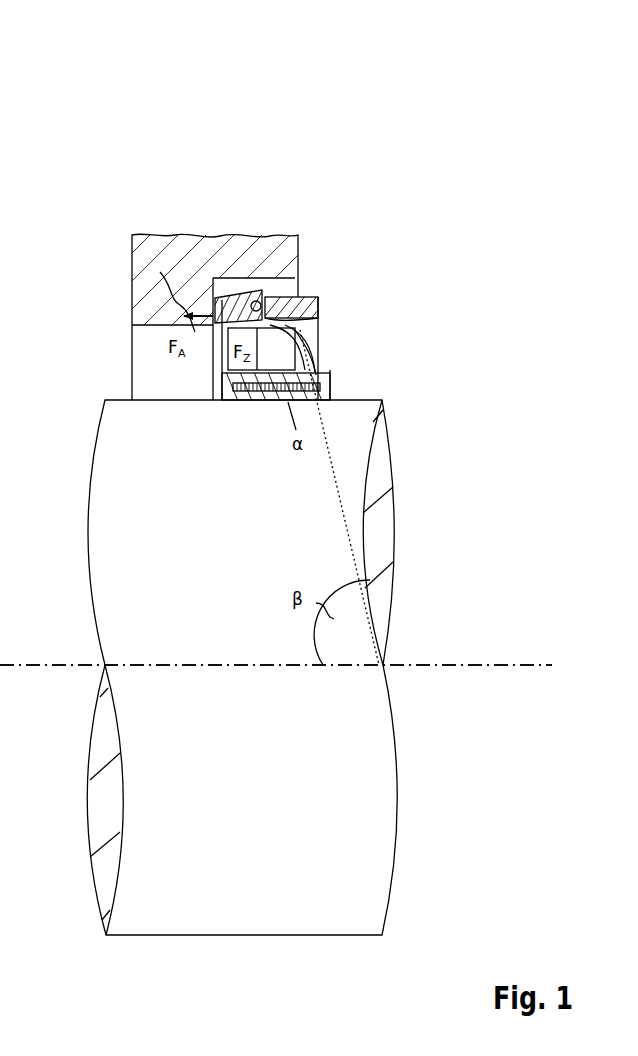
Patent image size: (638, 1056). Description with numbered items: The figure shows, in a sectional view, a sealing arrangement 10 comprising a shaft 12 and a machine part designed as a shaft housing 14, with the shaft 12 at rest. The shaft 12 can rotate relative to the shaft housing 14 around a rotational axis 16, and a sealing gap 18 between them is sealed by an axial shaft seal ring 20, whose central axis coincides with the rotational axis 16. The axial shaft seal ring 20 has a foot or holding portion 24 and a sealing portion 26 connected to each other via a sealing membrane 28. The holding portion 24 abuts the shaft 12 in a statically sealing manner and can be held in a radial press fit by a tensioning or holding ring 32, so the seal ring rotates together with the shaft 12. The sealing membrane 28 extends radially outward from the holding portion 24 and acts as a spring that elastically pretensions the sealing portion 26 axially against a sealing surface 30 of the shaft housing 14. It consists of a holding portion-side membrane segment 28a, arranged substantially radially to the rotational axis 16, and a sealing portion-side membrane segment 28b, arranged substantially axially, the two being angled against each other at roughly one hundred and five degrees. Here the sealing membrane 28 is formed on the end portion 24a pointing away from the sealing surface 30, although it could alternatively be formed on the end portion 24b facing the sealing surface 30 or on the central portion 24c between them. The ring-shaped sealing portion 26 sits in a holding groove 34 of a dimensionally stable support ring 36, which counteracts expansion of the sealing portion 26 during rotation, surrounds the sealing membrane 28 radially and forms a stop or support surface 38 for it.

The sealing arrangement 10 is at (467, 94).
The shaft 12 is at (240, 622).
The shaft housing 14 is at (290, 262).
The rotational axis 16 is at (477, 665).
The sealing gap 18 is at (292, 284).
The axial shaft seal ring 20 is at (218, 296).
The holding portion 24 is at (272, 400).
The end portion 24a is at (374, 420).
The end portion 24b is at (210, 398).
The central portion 24c is at (256, 402).
The sealing portion 26 is at (160, 272).
The sealing membrane 28 is at (318, 352).
The holding portion-side membrane segment 28a is at (318, 360).
The sealing portion-side membrane segment 28b is at (322, 318).
The sealing surface 30 is at (222, 280).
The holding ring 32 is at (240, 398).
The holding groove 34 is at (262, 311).
The support ring 36 is at (254, 300).
The support surface 38 is at (322, 306).